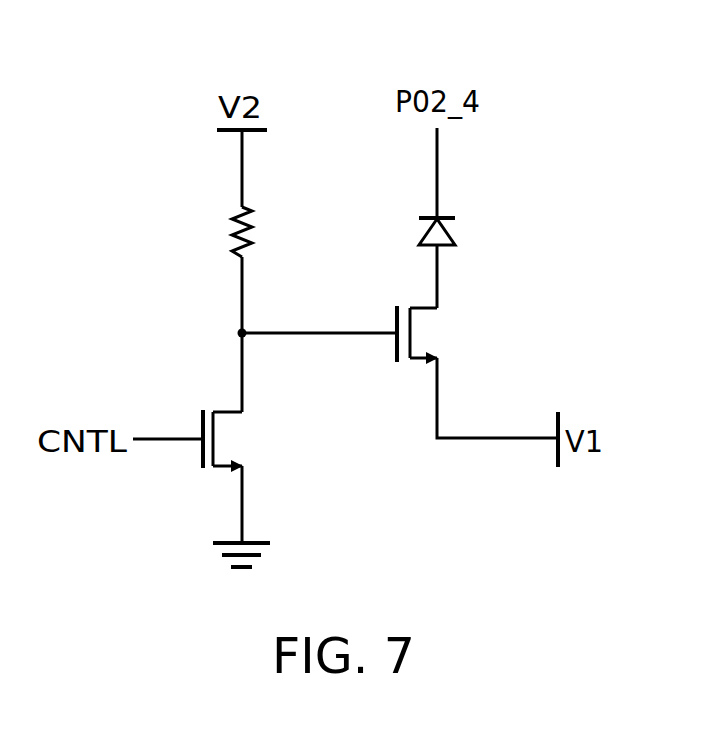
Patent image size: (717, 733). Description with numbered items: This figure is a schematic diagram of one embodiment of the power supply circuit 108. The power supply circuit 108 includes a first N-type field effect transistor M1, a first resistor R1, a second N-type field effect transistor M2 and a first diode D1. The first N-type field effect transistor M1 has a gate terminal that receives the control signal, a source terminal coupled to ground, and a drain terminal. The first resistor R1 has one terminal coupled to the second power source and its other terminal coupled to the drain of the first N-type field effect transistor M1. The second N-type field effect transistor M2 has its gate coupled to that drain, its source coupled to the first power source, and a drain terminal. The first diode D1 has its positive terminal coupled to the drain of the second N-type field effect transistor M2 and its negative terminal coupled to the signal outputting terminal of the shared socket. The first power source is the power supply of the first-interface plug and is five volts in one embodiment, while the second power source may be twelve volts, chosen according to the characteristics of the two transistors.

The power supply circuit 108 is at (621, 92).
The first resistor R1 is at (250, 228).
The first diode D1 is at (455, 232).
The first N-type field effect transistor M1 is at (230, 440).
The second N-type field effect transistor M2 is at (425, 333).